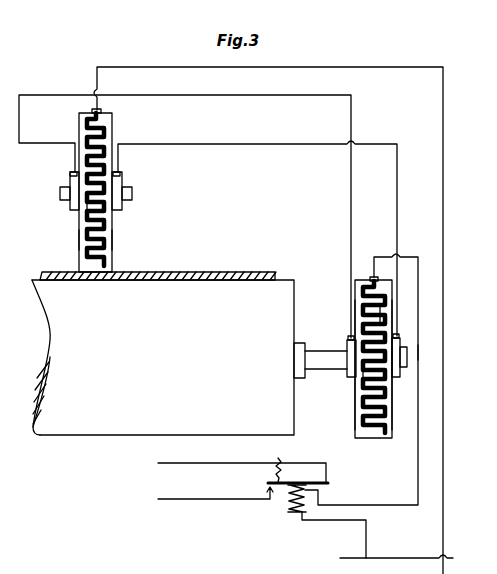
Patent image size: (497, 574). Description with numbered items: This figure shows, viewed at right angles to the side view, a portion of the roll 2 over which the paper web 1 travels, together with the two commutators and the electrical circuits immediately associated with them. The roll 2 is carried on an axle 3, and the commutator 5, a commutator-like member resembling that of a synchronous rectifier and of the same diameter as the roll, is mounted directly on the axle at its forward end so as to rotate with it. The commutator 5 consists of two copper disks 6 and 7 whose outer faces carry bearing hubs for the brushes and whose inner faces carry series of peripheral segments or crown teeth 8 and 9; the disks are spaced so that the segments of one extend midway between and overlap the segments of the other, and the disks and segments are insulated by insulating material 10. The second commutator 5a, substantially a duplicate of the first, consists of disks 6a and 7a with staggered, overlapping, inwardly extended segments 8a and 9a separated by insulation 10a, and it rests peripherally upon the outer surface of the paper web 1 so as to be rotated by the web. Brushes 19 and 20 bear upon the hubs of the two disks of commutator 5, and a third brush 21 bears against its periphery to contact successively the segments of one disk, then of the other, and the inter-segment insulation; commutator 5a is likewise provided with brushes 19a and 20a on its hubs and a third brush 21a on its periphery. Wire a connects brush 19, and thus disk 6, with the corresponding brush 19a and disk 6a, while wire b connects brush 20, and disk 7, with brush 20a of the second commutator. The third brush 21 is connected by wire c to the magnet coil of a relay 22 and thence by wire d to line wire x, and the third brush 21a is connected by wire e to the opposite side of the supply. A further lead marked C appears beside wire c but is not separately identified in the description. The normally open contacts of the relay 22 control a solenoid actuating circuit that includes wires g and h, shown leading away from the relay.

The paper web 1 is at (182, 278).
The roll 2 is at (73, 333).
The axle 3 is at (308, 352).
The commutator 5 is at (370, 280).
The second commutator 5a is at (85, 112).
The copper disk 6 is at (392, 410).
The disk 6a is at (106, 240).
The copper disk 7 is at (356, 419).
The disk 7a is at (83, 245).
The peripheral segments or crown teeth 8 is at (378, 360).
The segments 8a is at (100, 218).
The peripheral segments or crown teeth 9 is at (366, 372).
The segments 9a is at (90, 228).
The insulating material 10 is at (380, 315).
The insulation 10a is at (95, 183).
The brush 19 is at (398, 338).
The brush 19a is at (120, 171).
The brush 20 is at (350, 340).
The brush 20a is at (82, 177).
The third brush 21 is at (374, 277).
The third brush 21a is at (101, 111).
The relay 22 is at (290, 506).
The wire a is at (290, 144).
The wire b is at (298, 95).
The wire c is at (341, 505).
The conductor C is at (418, 352).
The wire d is at (333, 520).
The wire e is at (382, 60).
The wire g is at (190, 463).
The wire h is at (203, 499).
The line wire x is at (386, 559).